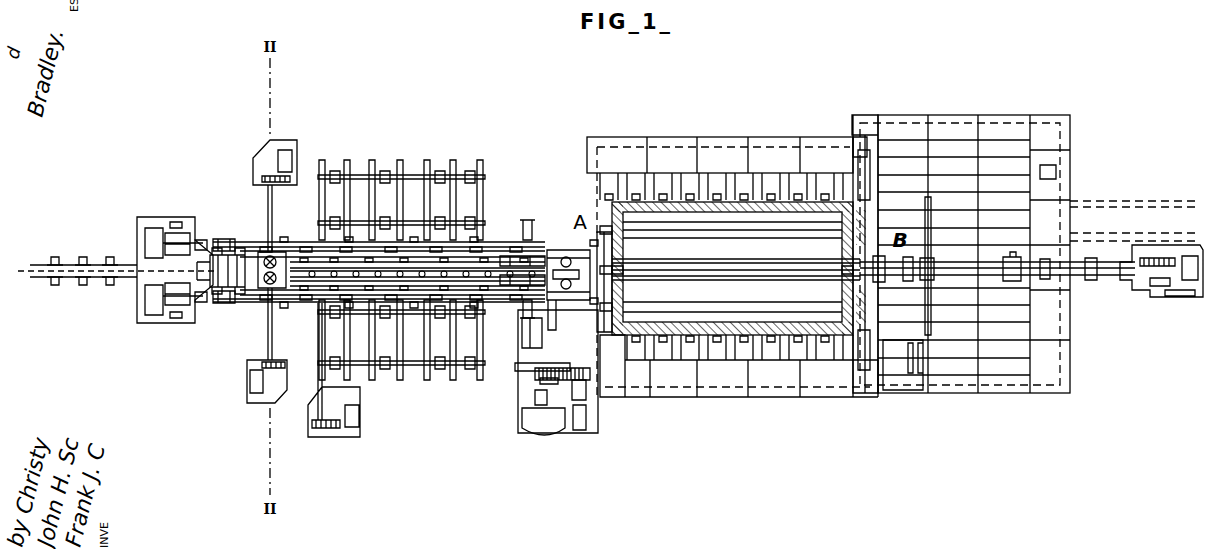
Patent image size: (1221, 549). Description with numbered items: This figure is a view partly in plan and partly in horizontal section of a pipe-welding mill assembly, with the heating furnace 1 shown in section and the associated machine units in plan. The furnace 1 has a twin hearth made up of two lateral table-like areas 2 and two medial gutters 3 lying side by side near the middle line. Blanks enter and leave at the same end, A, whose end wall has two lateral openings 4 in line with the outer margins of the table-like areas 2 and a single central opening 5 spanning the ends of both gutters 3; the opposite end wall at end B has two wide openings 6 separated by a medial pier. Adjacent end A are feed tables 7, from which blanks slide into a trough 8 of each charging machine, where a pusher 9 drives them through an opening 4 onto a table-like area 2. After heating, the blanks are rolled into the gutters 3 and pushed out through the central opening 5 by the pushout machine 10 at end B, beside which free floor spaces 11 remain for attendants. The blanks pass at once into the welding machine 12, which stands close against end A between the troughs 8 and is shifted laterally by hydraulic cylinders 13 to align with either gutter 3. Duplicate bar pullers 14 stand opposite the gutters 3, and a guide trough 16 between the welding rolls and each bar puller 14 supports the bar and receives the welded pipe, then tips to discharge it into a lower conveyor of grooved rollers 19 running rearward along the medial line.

The heating furnace 1 is at (748, 337).
The table-like areas 2 is at (732, 267).
The medial gutters 3 is at (770, 260).
The lateral openings 4 is at (613, 230).
The central opening 5 is at (613, 267).
The wide openings 6 is at (860, 245).
The feed tables 7 is at (401, 270).
The trough 8 is at (478, 245).
The pusher 9 is at (233, 245).
The pushout machine 10 is at (1158, 292).
The free floor spaces 11 is at (952, 183).
The welding machine 12 is at (552, 280).
The hydraulic cylinders 13 is at (580, 380).
The bar pullers 14 is at (267, 262).
The guide trough 16 is at (320, 265).
The grooved rollers 19 is at (57, 268).